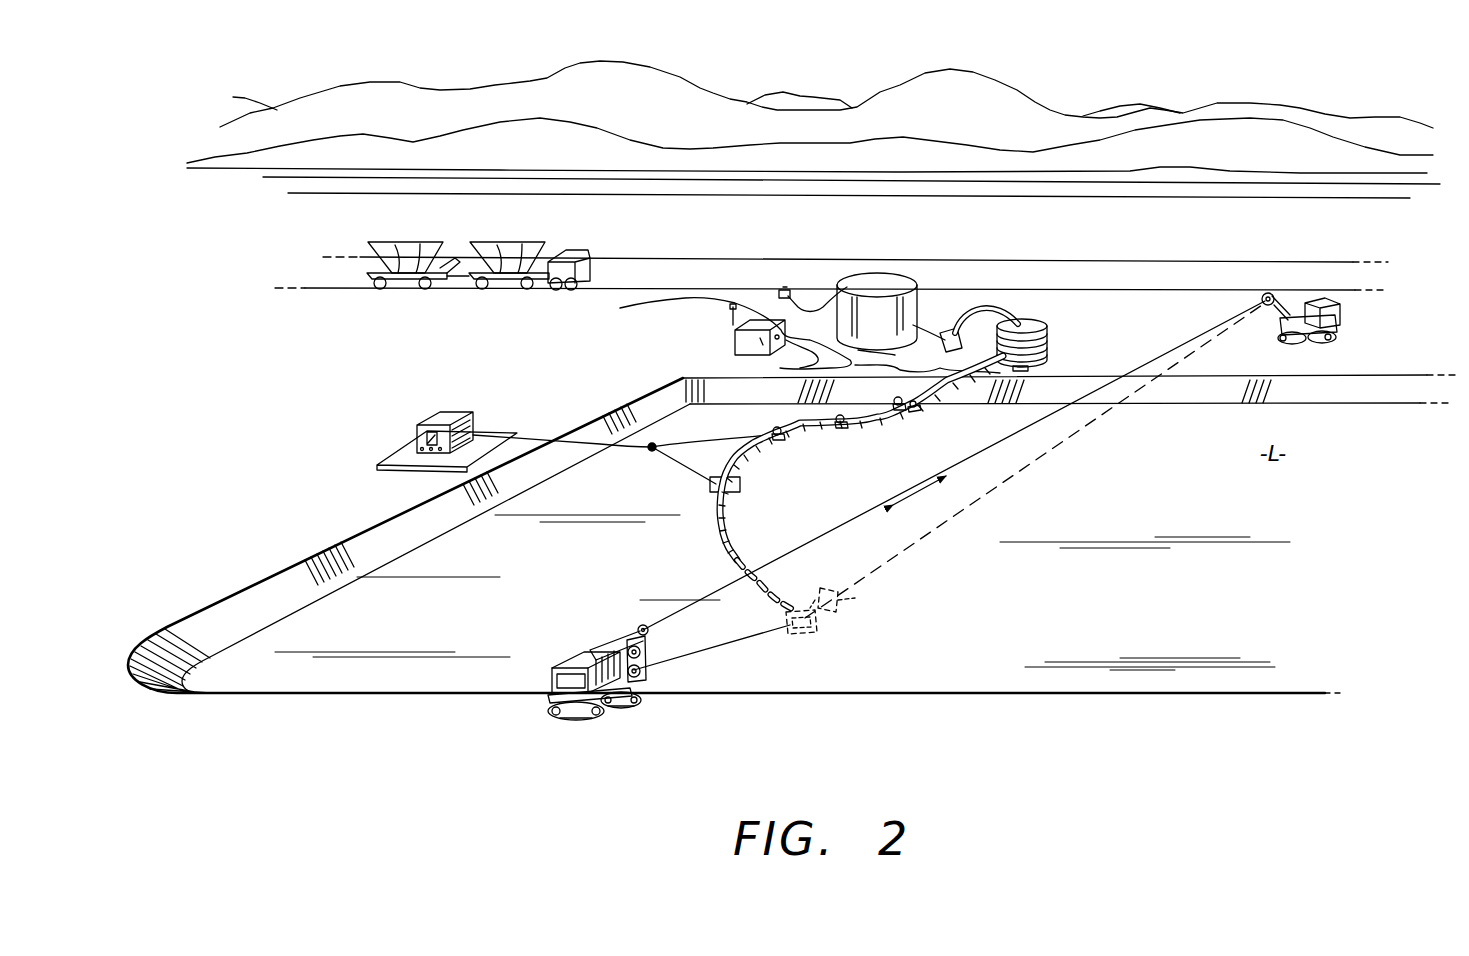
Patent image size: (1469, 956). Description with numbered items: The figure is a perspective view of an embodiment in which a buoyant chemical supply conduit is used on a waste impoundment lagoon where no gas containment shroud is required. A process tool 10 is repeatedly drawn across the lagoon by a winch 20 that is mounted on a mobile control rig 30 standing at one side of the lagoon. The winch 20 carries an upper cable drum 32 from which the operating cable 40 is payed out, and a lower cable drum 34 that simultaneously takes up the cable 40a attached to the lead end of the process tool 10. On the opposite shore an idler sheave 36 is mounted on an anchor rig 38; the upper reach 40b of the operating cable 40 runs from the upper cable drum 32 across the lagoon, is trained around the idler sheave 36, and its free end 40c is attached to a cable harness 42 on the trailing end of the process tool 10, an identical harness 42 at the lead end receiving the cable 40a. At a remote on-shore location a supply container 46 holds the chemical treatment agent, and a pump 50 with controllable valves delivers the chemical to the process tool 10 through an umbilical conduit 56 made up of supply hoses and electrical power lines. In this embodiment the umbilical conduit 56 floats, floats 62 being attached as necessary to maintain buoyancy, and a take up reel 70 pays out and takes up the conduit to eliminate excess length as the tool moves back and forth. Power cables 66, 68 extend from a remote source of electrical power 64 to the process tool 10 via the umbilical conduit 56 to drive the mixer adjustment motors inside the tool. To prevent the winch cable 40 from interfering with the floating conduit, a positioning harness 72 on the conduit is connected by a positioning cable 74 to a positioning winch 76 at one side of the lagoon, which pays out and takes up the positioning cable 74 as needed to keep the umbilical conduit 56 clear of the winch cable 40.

The process tool 10 is at (820, 620).
The winch 20 is at (562, 644).
The mobile control rig 30 is at (552, 703).
The upper cable drum 32 is at (648, 650).
The lower cable drum 34 is at (644, 674).
The idler sheave 36 is at (1268, 299).
The anchor rig 38 is at (1340, 322).
The operating cable 40 is at (981, 443).
The cable 40a is at (712, 650).
The upper reach 40b is at (707, 592).
The free end 40c is at (1071, 438).
The cable harness 42 is at (852, 598).
The supply container 46 is at (895, 278).
The pump 50 is at (949, 330).
The umbilical conduit 56 is at (716, 512).
The floats 62 is at (777, 437).
The transmitter unit 64 is at (737, 345).
The power cable 66 is at (777, 366).
The power cable 68 is at (413, 315).
The take up reel 70 is at (1068, 350).
The positioning harness 72 is at (738, 436).
The positioning cable 74 is at (533, 438).
The positioning winch 76 is at (441, 418).